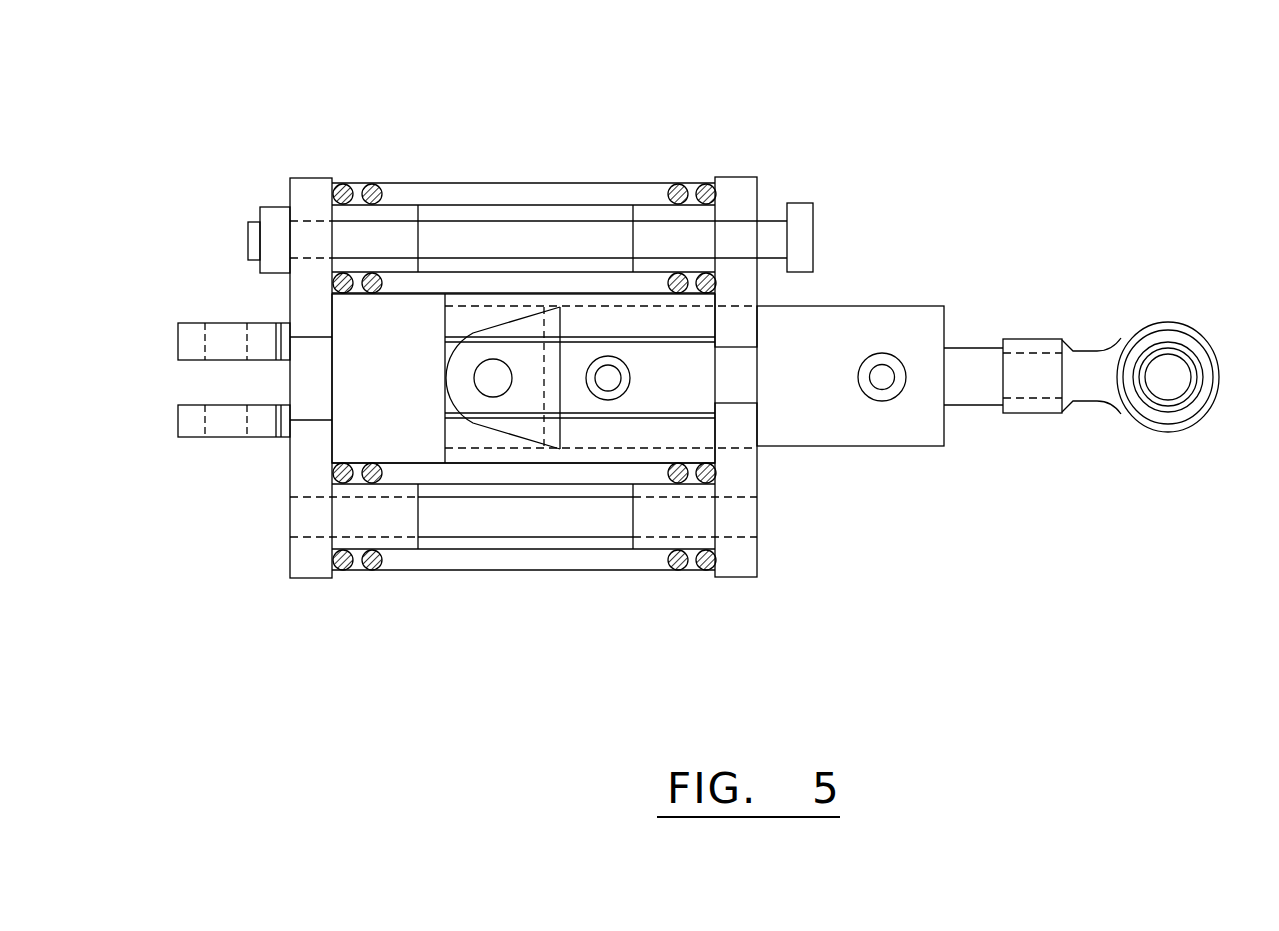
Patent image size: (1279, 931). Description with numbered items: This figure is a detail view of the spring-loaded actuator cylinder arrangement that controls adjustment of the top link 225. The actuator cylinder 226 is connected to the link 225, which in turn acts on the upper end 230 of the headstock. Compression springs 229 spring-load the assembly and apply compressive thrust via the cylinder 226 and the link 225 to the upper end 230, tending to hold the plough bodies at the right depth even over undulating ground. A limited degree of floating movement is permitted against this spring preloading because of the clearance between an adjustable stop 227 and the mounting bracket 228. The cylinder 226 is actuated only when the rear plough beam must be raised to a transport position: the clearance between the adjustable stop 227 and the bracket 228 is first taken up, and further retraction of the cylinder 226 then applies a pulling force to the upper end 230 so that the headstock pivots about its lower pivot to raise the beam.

The top link 225 is at (963, 363).
The actuator cylinder 226 is at (833, 330).
The adjustable stop 227 is at (809, 208).
The mounting bracket 228 is at (745, 193).
The compression springs 229 is at (678, 188).
The upper end of the headstock 230 is at (1183, 422).